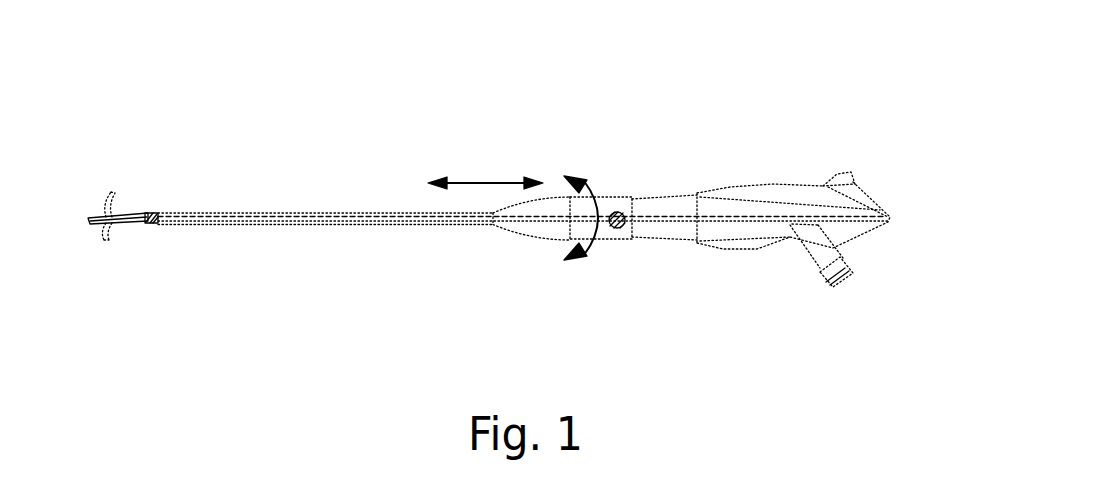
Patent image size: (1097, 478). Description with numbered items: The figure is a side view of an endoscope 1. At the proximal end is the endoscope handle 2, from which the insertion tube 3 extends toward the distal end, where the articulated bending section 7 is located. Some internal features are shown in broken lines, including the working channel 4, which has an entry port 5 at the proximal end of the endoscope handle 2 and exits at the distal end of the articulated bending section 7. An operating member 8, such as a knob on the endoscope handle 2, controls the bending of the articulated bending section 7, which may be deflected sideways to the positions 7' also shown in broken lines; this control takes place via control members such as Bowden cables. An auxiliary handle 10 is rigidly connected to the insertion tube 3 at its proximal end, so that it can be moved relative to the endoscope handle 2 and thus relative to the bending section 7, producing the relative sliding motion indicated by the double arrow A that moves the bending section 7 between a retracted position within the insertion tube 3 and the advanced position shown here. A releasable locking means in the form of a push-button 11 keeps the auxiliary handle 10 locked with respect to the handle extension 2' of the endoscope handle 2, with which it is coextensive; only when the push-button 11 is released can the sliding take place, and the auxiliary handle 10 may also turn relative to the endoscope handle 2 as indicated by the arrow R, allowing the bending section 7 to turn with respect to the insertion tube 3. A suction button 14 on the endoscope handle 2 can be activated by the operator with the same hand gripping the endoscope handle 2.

The endoscope 1 is at (567, 128).
The endoscope handle 2 is at (793, 275).
The handle extension 2' is at (677, 269).
The insertion tube 3 is at (320, 225).
The working channel 4 is at (727, 215).
The entry port 5 is at (890, 218).
The articulated bending section 7 is at (98, 174).
The deflected positions of the bending section 7' is at (149, 217).
The operating member 8 is at (849, 174).
The auxiliary handle 10 is at (612, 197).
The push-button 11 is at (617, 228).
The suction button 14 is at (843, 278).